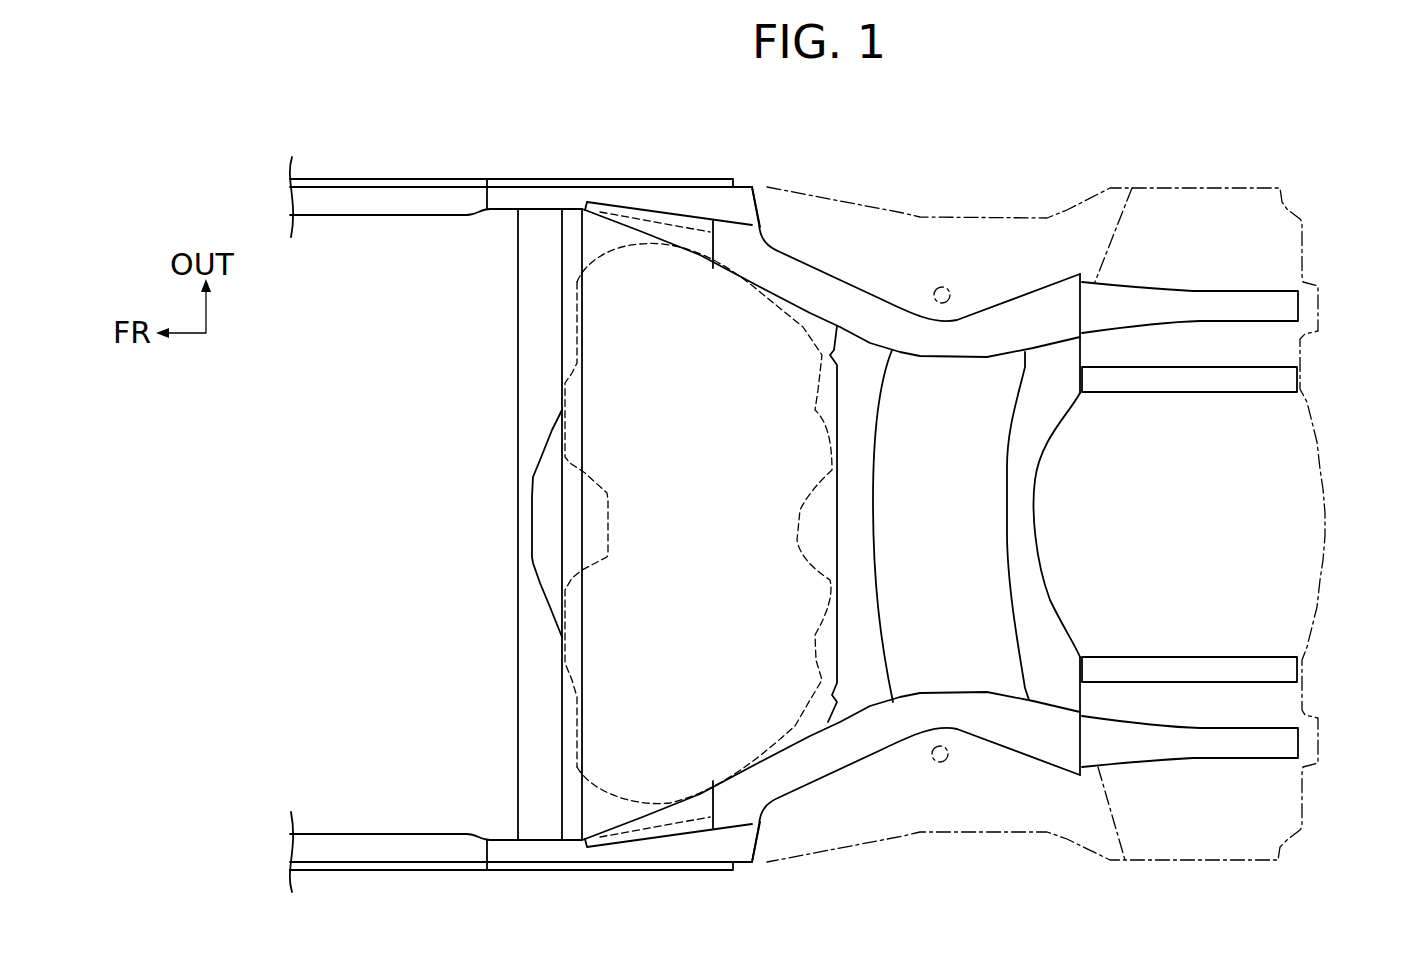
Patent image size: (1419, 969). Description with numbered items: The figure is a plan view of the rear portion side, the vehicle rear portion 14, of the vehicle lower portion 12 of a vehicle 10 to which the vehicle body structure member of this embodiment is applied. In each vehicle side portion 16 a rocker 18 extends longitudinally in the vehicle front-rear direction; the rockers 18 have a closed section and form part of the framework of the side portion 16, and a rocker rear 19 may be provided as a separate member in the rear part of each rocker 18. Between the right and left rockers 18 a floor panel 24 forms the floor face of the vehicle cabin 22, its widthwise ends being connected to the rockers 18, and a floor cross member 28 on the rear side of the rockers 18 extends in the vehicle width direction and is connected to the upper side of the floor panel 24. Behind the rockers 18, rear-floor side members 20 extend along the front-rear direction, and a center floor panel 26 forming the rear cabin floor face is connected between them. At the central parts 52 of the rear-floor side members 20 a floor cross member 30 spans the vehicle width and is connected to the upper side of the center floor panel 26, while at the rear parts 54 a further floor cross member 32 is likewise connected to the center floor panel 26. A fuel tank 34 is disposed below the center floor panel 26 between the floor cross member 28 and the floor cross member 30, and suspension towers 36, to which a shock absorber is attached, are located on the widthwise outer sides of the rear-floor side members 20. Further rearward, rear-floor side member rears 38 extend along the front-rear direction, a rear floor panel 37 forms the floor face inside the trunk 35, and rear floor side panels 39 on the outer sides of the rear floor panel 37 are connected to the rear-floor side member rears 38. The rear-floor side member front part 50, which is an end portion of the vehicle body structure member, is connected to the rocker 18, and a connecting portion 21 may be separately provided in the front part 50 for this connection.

The vehicle 10 is at (1058, 146).
The vehicle lower portion 12 is at (791, 166).
The vehicle rear portion 14 is at (901, 202).
The vehicle side portion 16 is at (433, 164).
The rocker 18 is at (397, 197).
The rocker rear 19 is at (542, 204).
The rear-floor side member 20 is at (968, 312).
The connecting portion 21 is at (680, 233).
The vehicle cabin 22 is at (364, 314).
The floor panel 24 is at (341, 217).
The center floor panel 26 is at (690, 287).
The floor cross member 28 is at (523, 463).
The floor cross member 30 is at (863, 500).
The floor cross member 32 is at (1015, 510).
The fuel tank 34 is at (600, 390).
The trunk 35 is at (1152, 511).
The suspension tower 36 is at (933, 297).
The rear floor panel 37 is at (1273, 485).
The rear-floor side member rear 38 is at (1218, 300).
The rear floor side panel 39 is at (1273, 248).
The rear-floor side member front part 50 is at (725, 250).
The central part 52 is at (843, 308).
The rear part 54 is at (1060, 330).